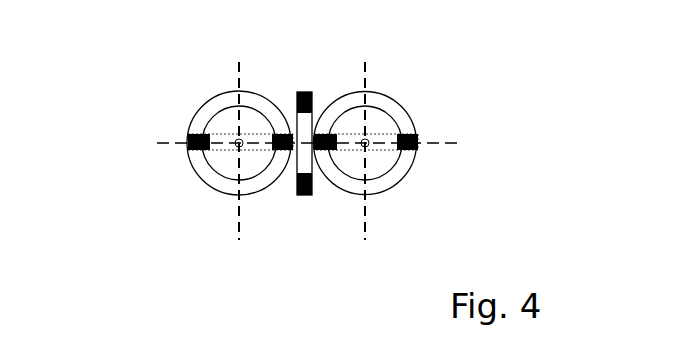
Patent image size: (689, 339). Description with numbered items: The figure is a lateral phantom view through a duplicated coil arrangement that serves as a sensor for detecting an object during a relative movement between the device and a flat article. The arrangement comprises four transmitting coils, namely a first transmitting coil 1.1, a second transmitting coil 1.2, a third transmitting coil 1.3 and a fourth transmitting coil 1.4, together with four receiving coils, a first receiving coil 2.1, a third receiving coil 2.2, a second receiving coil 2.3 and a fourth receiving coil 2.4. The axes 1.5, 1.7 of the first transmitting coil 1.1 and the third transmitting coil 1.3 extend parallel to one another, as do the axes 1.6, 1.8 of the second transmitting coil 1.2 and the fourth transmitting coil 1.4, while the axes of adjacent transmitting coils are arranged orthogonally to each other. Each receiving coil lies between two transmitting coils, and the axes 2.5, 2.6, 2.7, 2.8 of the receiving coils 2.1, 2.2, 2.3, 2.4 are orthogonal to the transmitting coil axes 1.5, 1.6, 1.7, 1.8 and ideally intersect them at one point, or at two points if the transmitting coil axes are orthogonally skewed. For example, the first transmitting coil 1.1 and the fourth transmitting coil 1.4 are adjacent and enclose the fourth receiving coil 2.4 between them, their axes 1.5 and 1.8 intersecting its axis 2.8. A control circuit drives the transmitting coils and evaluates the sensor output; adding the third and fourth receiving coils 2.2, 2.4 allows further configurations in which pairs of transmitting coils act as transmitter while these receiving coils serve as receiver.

The first transmitting coil 1.1 is at (278, 112).
The third transmitting coil 1.3 is at (296, 107).
The second transmitting coil 1.2 is at (407, 172).
The fourth transmitting coil 1.4 is at (218, 188).
The axis of the first transmitting coil 1.5 is at (332, 98).
The axis of the third transmitting coil 1.7 is at (443, 143).
The axis of the second transmitting coil 1.6 is at (368, 148).
The axis of the fourth transmitting coil 1.8 is at (243, 148).
The first receiving coil 2.1 is at (432, 160).
The third receiving coil 2.2 is at (418, 147).
The second receiving coil 2.3 is at (180, 172).
The fourth receiving coil 2.4 is at (188, 148).
The axis of the first receiving coil 2.5 is at (302, 179).
The axis of the third receiving coil 2.6 is at (358, 212).
The axis of the second receiving coil 2.7 is at (204, 111).
The axis of the fourth receiving coil 2.8 is at (240, 92).